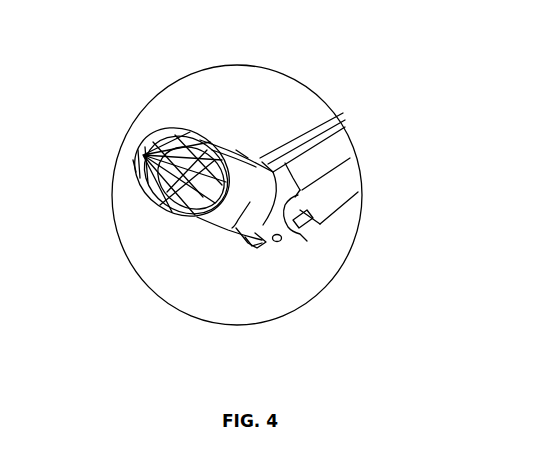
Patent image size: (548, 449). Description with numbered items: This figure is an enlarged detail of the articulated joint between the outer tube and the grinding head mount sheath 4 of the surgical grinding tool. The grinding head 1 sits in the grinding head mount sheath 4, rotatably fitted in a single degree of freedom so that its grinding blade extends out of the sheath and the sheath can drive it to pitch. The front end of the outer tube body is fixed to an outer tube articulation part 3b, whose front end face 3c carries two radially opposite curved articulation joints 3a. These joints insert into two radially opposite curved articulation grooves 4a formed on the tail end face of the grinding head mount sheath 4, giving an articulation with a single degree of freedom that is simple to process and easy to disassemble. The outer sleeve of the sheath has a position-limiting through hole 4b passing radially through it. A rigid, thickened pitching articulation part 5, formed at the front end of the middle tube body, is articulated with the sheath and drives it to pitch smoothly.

The grinding head 1 is at (153, 140).
The curved articulation joint 3a is at (298, 210).
The outer tube articulation part 3b is at (328, 175).
The front end face 3c is at (310, 148).
The grinding head mount sheath 4 is at (207, 217).
The curved articulation groove 4a is at (300, 212).
The position-limiting through hole 4b is at (242, 155).
The pitching articulation part 5 is at (252, 245).